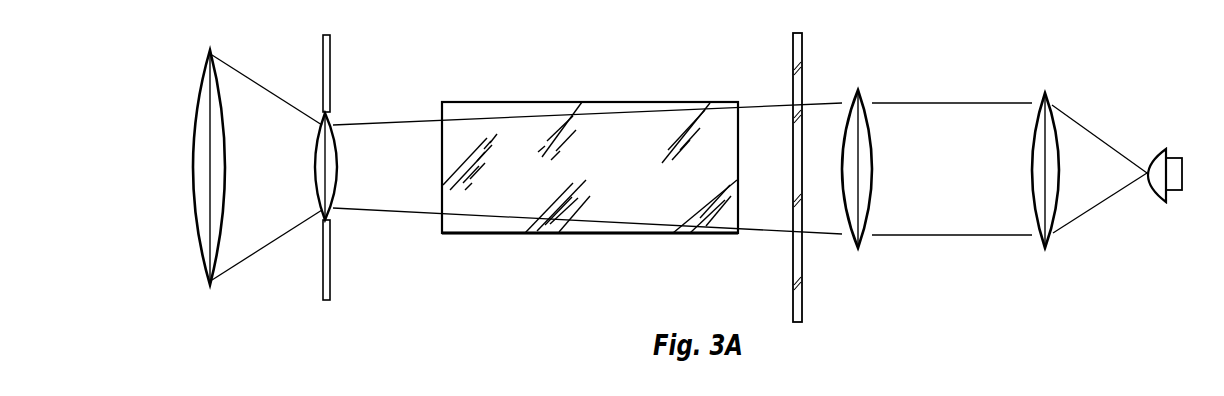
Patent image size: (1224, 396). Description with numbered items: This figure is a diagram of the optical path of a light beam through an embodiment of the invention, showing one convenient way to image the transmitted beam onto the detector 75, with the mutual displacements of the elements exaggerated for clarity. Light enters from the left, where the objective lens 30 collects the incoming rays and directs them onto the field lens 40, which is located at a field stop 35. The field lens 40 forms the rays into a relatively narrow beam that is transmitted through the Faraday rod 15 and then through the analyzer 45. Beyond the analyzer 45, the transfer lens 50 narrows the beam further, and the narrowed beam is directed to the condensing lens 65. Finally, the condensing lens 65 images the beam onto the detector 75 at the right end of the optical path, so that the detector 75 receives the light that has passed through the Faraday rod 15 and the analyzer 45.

The objective lens 30 is at (204, 68).
The field stop 35 is at (324, 53).
The field lens 40 is at (330, 122).
The Faraday rod 15 is at (624, 108).
The analyzer 45 is at (793, 50).
The transfer lens 50 is at (860, 100).
The condensing lens 65 is at (1043, 97).
The detector 75 is at (1168, 130).